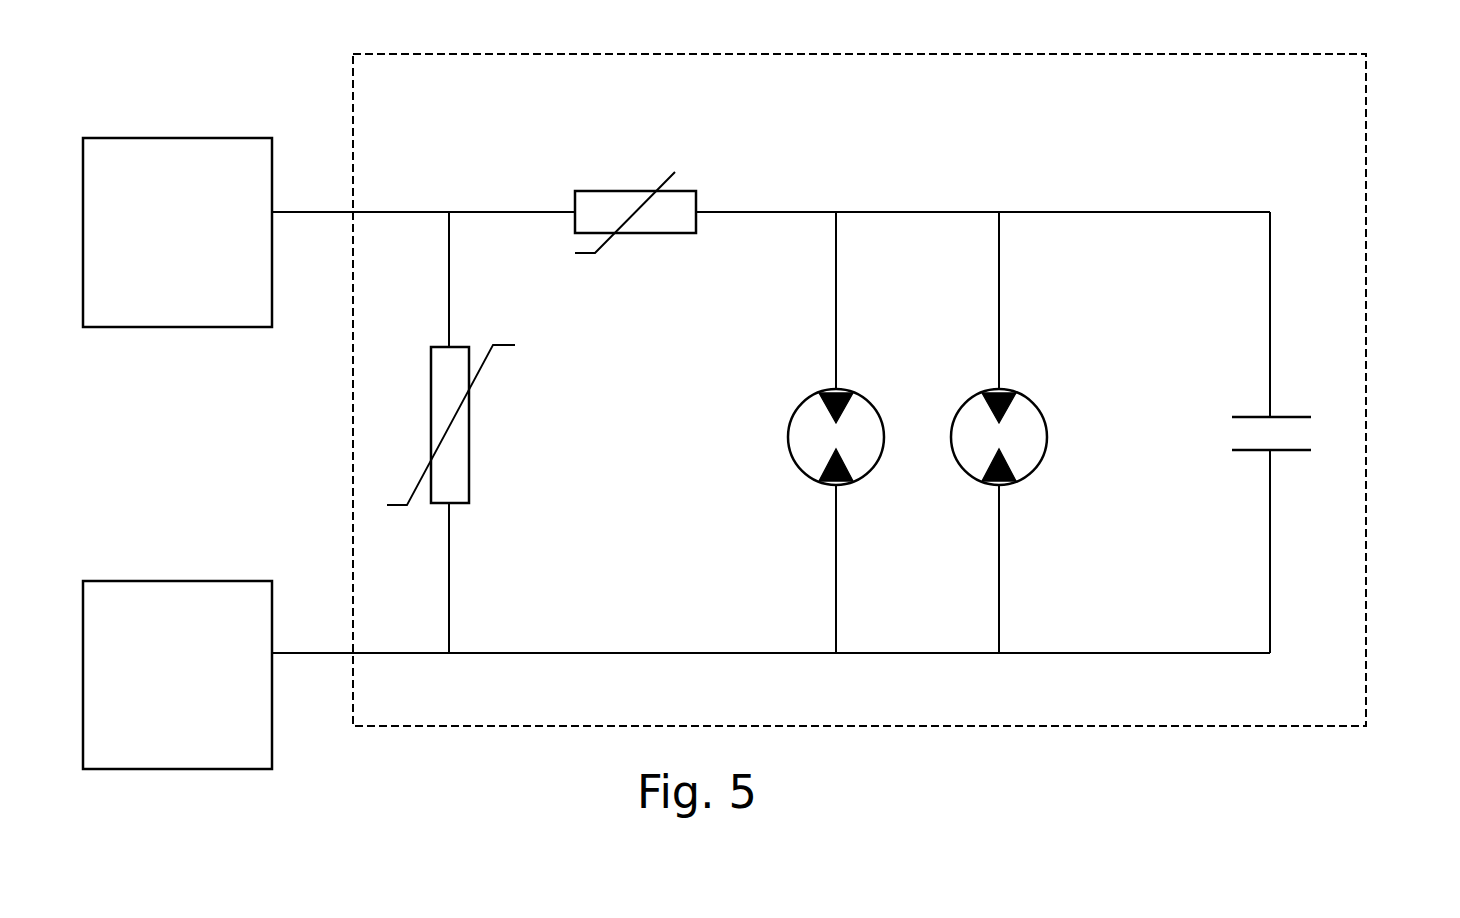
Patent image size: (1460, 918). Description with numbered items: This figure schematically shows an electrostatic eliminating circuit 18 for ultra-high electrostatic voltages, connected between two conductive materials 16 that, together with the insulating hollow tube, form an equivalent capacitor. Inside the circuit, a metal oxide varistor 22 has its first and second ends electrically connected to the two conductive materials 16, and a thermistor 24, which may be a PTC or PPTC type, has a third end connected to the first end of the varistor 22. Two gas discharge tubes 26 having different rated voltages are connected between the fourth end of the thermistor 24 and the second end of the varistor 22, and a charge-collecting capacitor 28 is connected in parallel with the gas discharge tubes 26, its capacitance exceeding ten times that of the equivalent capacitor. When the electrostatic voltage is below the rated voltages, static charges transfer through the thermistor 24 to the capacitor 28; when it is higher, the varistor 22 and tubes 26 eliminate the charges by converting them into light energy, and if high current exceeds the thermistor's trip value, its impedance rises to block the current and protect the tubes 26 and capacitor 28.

The conductive material 16 is at (152, 138).
The electrostatic eliminating circuit 18 is at (1366, 180).
The metal oxide varistor 22 is at (470, 455).
The thermistor 24 is at (610, 191).
The gas discharge tube 26 is at (864, 398).
The charge-collecting capacitor 28 is at (1290, 417).